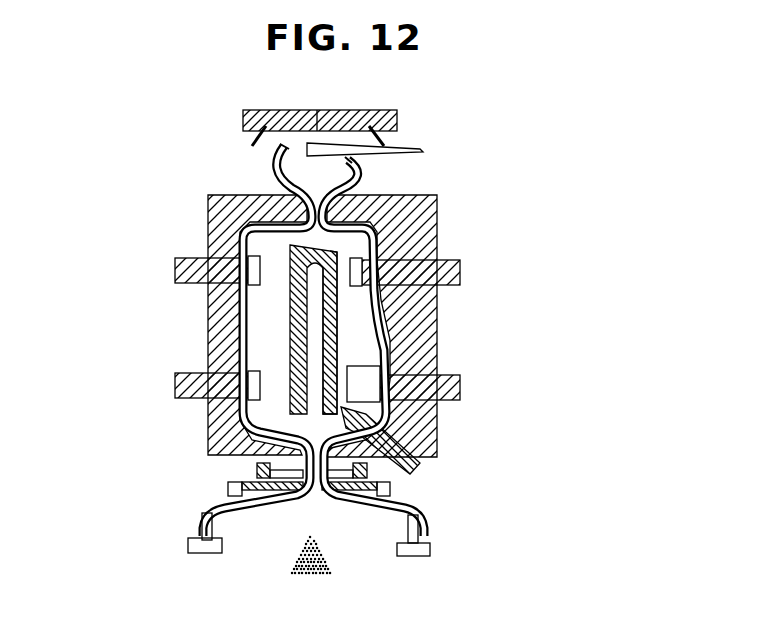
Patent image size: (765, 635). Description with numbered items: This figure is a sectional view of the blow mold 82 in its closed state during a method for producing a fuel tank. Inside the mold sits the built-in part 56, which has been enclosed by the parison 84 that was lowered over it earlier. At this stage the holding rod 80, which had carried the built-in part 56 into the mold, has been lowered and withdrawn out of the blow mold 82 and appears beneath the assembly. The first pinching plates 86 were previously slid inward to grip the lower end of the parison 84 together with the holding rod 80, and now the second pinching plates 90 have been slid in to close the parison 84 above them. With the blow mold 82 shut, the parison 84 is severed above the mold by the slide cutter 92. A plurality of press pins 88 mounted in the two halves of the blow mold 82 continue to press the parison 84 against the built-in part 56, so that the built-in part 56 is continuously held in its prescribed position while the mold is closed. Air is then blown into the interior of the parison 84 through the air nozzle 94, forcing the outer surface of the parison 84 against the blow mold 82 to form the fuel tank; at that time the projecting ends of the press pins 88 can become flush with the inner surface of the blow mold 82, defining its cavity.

The built-in part 56 is at (290, 326).
The holding rod 80 is at (332, 563).
The blow mold 82 is at (184, 222).
The parison 84 is at (337, 322).
The first pinching plates 86 is at (390, 490).
The press pins 88 is at (175, 268).
The second pinching plates 90 is at (255, 472).
The slide cutter 92 is at (420, 152).
The air nozzle 94 is at (410, 470).